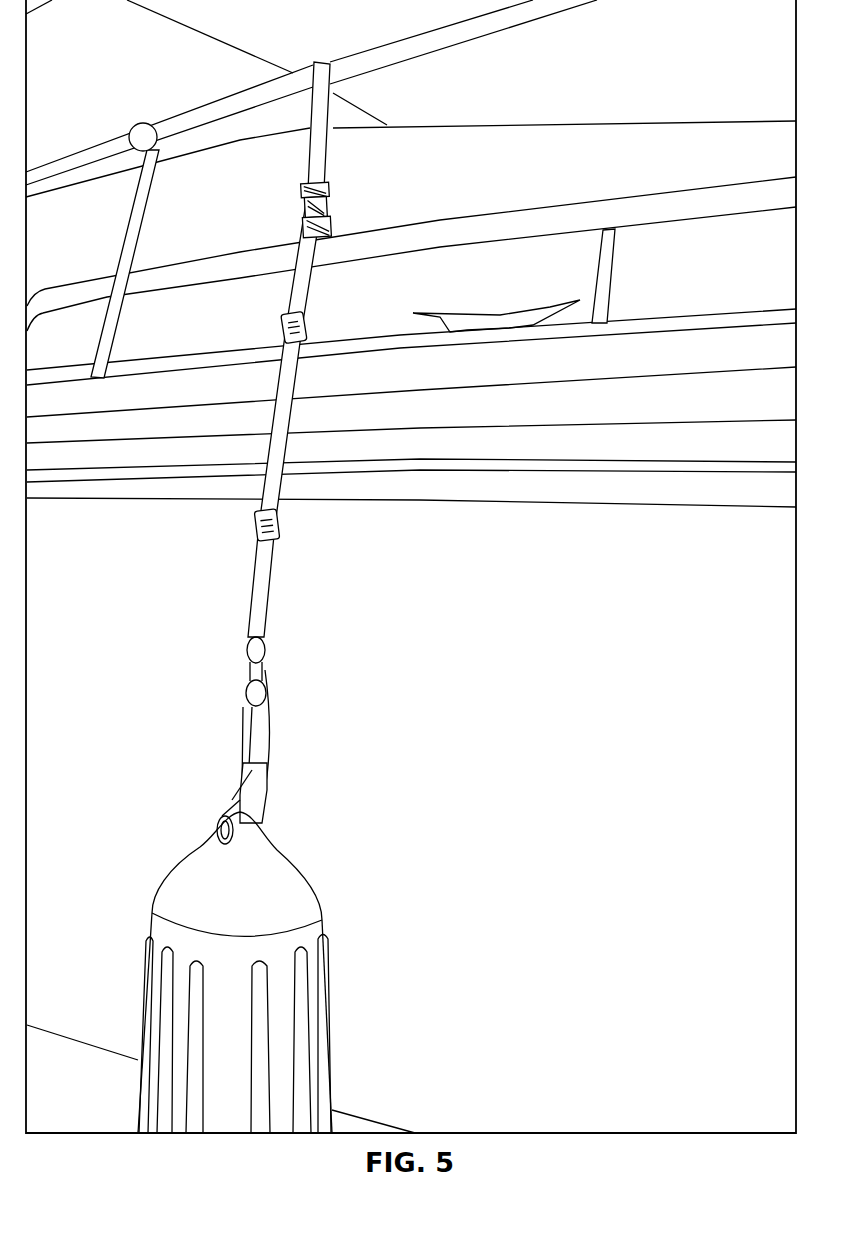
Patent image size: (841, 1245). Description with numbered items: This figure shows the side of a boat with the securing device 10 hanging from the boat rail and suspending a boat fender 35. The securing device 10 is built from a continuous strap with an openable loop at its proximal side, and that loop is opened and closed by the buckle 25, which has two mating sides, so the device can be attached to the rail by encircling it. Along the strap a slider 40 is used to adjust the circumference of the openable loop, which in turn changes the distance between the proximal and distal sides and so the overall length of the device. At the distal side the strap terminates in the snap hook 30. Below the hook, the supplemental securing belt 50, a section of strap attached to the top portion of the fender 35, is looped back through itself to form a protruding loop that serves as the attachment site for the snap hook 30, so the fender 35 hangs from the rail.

The securing device 10 is at (353, 280).
The buckle 25 is at (327, 202).
The slider 40 is at (283, 316).
The snap hook 30 is at (247, 677).
The supplemental securing belt 50 is at (243, 764).
The fender 35 is at (238, 1075).